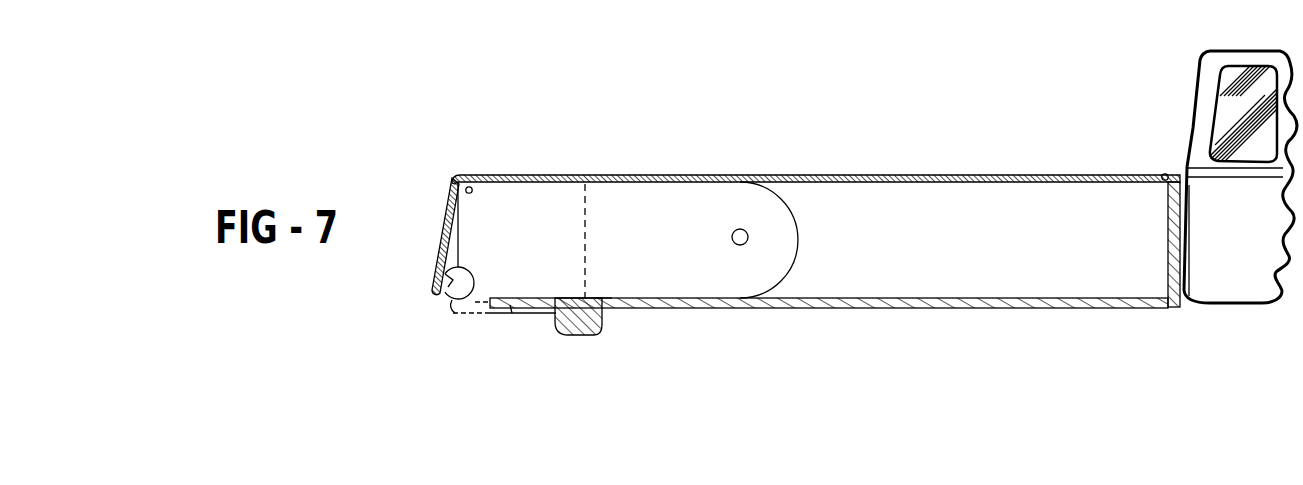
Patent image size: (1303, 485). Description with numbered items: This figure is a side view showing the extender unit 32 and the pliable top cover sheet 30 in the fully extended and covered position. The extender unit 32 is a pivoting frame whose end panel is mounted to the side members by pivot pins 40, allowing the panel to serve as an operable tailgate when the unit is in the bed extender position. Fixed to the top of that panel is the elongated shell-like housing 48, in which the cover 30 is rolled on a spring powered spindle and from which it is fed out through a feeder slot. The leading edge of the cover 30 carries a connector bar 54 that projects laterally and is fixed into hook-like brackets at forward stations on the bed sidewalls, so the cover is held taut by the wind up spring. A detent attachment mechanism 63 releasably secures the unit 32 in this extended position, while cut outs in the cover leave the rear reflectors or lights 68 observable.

The top cover sheet 30 is at (838, 176).
The extender unit 32 is at (566, 196).
The pivot pins 40 is at (473, 190).
The housing 48 is at (436, 278).
The connector bar 54 is at (1164, 174).
The detent attachment mechanism 63 is at (603, 310).
The rear reflectors or lights 68 is at (605, 294).